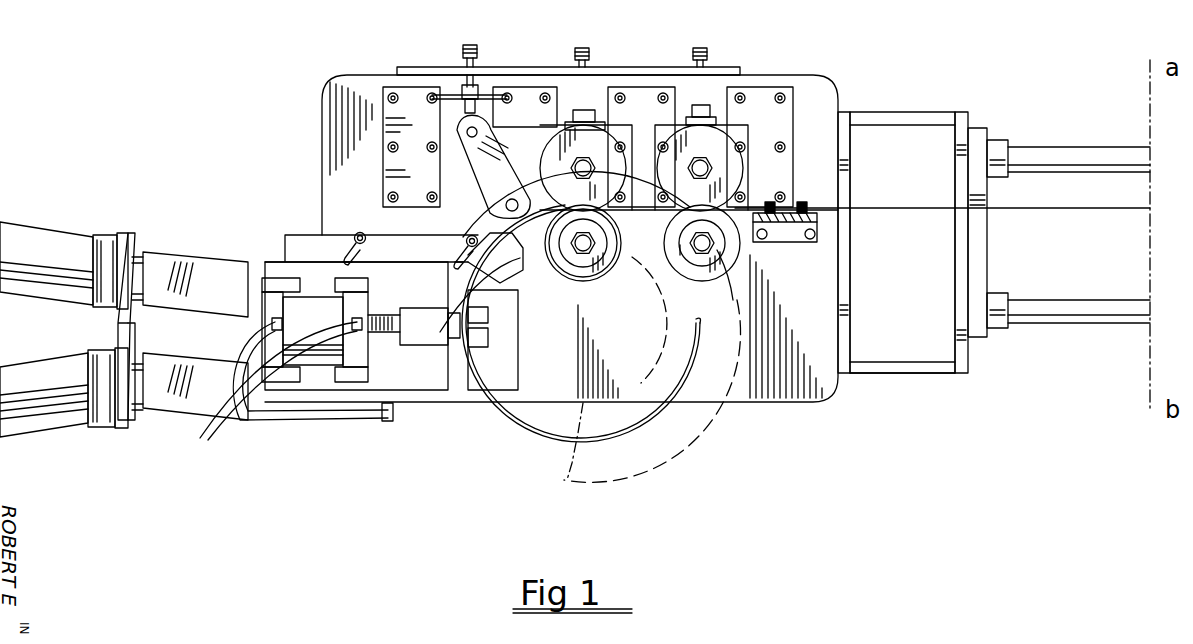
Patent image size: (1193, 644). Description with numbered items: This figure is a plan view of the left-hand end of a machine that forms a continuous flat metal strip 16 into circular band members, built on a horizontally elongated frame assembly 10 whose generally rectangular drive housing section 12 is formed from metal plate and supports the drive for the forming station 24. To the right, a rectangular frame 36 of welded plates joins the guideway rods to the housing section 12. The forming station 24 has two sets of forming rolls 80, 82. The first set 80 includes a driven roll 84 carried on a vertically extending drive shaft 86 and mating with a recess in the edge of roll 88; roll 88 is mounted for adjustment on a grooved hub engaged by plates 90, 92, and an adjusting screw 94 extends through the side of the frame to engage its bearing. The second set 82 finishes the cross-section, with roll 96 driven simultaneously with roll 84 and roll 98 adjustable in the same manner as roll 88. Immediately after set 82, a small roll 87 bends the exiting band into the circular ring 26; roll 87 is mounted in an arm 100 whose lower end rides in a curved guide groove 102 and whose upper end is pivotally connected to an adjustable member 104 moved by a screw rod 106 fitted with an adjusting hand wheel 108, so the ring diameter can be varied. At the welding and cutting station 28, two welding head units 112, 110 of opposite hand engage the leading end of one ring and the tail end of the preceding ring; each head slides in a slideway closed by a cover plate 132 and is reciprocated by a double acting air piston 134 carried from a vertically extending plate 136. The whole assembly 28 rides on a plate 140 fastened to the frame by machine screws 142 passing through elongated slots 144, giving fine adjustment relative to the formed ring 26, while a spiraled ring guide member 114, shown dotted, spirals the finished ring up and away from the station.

The frame assembly 10 is at (988, 72).
The drive housing section 12 is at (800, 36).
The metal strip 16 is at (896, 208).
The forming station 24 is at (772, 258).
The ring 26 is at (645, 428).
The welding and cutting station 28 is at (532, 339).
The rectangular frame 36 is at (928, 374).
The first set of forming rolls 80 is at (722, 296).
The second set of forming rolls 82 is at (606, 312).
The driven roll 84 is at (680, 278).
The drive shaft 86 is at (690, 243).
The roll 87 is at (533, 186).
The roll 88 is at (744, 163).
The plate 90 is at (776, 86).
The plate 92 is at (650, 86).
The adjusting screw 94 is at (712, 53).
The roll 96 is at (591, 282).
The roll 98 is at (549, 133).
The arm 100 is at (488, 192).
The curved guide groove 102 is at (520, 272).
The adjustable member 104 is at (500, 114).
The screw rod 106 is at (480, 54).
The adjusting hand wheel 108 is at (454, 85).
The welding head unit 110 is at (152, 440).
The welding head unit 112 is at (176, 228).
The spiraled ring guide member 114 is at (694, 426).
The cover plate 132 is at (205, 347).
The double acting air piston 134 is at (58, 425).
The vertically extending plate 136 is at (134, 416).
The plate 140 is at (315, 236).
The machine screws 142 is at (472, 236).
The elongated slots 144 is at (350, 256).